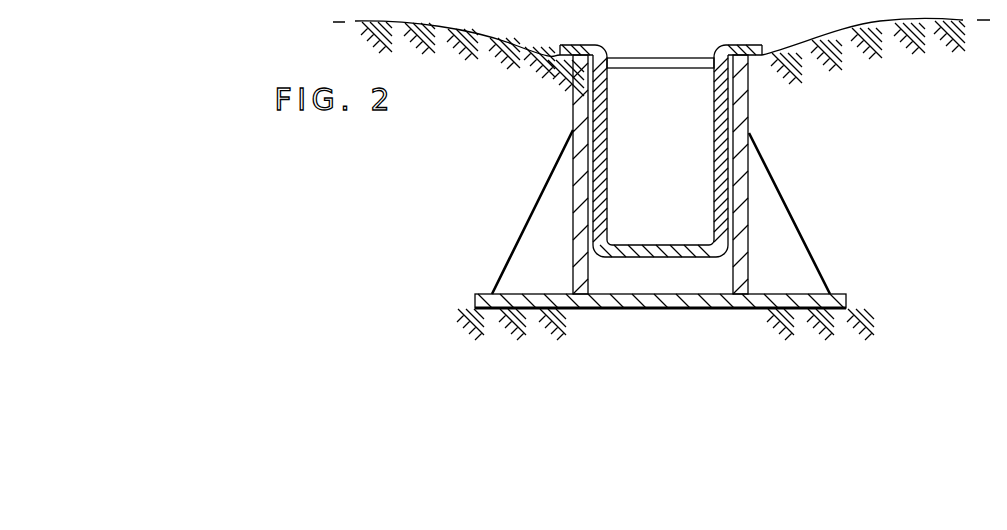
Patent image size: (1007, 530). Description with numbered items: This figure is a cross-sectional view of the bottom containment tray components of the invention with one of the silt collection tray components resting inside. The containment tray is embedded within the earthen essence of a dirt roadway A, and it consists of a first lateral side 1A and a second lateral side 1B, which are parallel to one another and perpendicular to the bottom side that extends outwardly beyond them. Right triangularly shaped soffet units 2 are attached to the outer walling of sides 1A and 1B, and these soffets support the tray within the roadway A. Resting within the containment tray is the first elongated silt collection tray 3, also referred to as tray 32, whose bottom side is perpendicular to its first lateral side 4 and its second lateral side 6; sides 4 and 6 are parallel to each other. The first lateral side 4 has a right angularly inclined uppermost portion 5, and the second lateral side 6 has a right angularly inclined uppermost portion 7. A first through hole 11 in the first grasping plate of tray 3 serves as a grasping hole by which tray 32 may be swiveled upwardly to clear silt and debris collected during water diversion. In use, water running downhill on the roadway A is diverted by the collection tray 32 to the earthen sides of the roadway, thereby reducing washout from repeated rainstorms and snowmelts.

The dirt roadway A is at (863, 25).
The first lateral side 1A is at (749, 167).
The second lateral side 1B is at (572, 200).
The right triangularly shaped soffet units 2 is at (505, 262).
The first elongated silt collection tray 3 is at (668, 257).
The first lateral side 4 is at (728, 115).
The right angularly inclined uppermost portion 5 is at (740, 44).
The second lateral side 6 is at (594, 112).
The right angularly inclined uppermost portion 7 is at (580, 44).
The first through hole 11 is at (640, 57).
The first elongated silt collection tray 32 is at (665, 128).